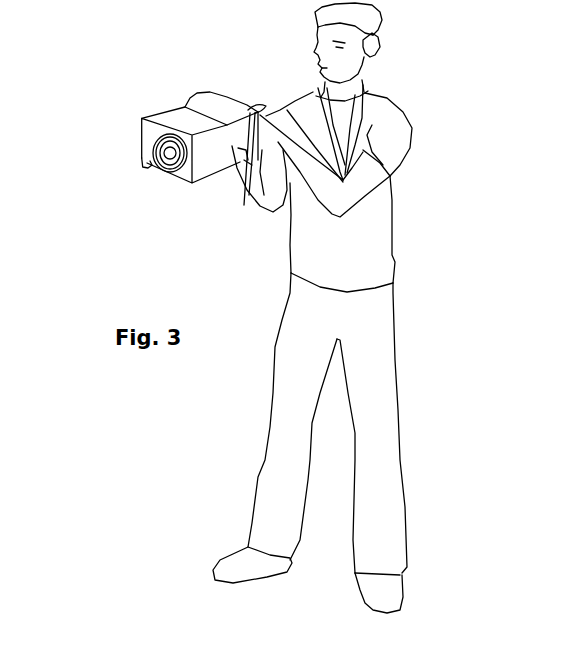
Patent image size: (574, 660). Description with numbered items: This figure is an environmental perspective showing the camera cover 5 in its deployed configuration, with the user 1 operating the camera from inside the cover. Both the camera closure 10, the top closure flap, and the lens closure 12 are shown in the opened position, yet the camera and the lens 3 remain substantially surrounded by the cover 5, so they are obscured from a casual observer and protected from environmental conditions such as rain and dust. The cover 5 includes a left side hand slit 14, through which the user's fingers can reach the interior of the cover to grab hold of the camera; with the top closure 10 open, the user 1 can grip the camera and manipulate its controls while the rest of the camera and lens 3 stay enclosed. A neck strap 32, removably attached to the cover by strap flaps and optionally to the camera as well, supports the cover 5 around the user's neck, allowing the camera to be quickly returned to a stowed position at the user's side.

The user 1 is at (393, 260).
The lens 3 is at (168, 158).
The camera cover 5 is at (226, 82).
The camera closure 10 is at (198, 105).
The lens closure 12 is at (149, 167).
The left side hand slit 14 is at (254, 134).
The neck strap 32 is at (353, 126).